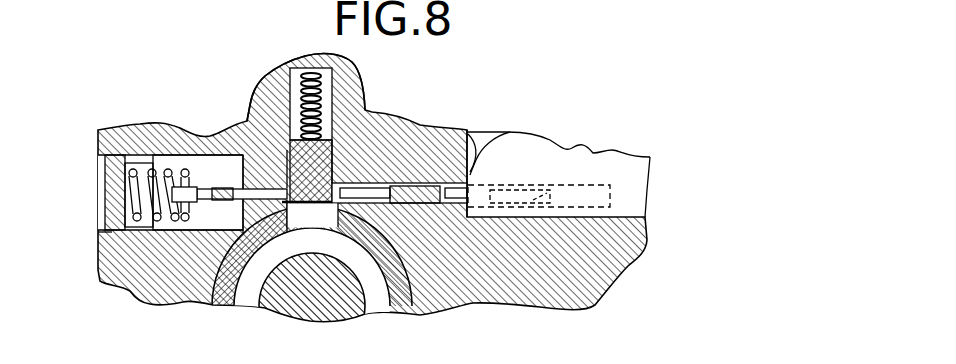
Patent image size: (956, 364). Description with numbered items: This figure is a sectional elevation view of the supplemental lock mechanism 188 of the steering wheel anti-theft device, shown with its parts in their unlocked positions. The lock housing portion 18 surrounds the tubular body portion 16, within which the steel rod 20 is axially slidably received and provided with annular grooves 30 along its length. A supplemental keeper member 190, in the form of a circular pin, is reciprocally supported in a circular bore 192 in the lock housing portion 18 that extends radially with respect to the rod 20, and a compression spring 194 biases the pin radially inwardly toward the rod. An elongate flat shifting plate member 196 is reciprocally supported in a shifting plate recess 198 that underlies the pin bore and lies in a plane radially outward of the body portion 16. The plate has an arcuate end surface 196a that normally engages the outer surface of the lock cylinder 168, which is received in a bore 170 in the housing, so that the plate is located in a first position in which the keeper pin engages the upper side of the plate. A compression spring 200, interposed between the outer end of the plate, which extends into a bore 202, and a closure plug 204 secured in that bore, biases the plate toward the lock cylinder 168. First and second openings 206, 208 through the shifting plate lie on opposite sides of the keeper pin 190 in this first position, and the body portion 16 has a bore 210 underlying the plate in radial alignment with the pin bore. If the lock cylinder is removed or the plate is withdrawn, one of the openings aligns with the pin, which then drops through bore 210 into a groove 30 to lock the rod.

The lock housing portion 18 is at (177, 305).
The tubular body portion 16 is at (222, 305).
The annular grooves 30 is at (251, 286).
The steel rod 20 is at (346, 324).
The supplemental lock mechanism 188 is at (90, 161).
The supplemental keeper member 190 is at (347, 110).
The circular bore 192 is at (270, 75).
The compression spring 194 is at (323, 73).
The shifting plate member 196 is at (530, 124).
The arcuate end surface 196a is at (555, 186).
The shifting plate recess 198 is at (423, 205).
The compression spring 200 is at (110, 228).
The bore 202 is at (210, 222).
The closure plug 204 is at (117, 198).
The first opening 206 is at (266, 190).
The second opening 208 is at (382, 190).
The bore 210 is at (339, 182).
The lock cylinder 168 is at (626, 177).
The bore 170 is at (473, 130).